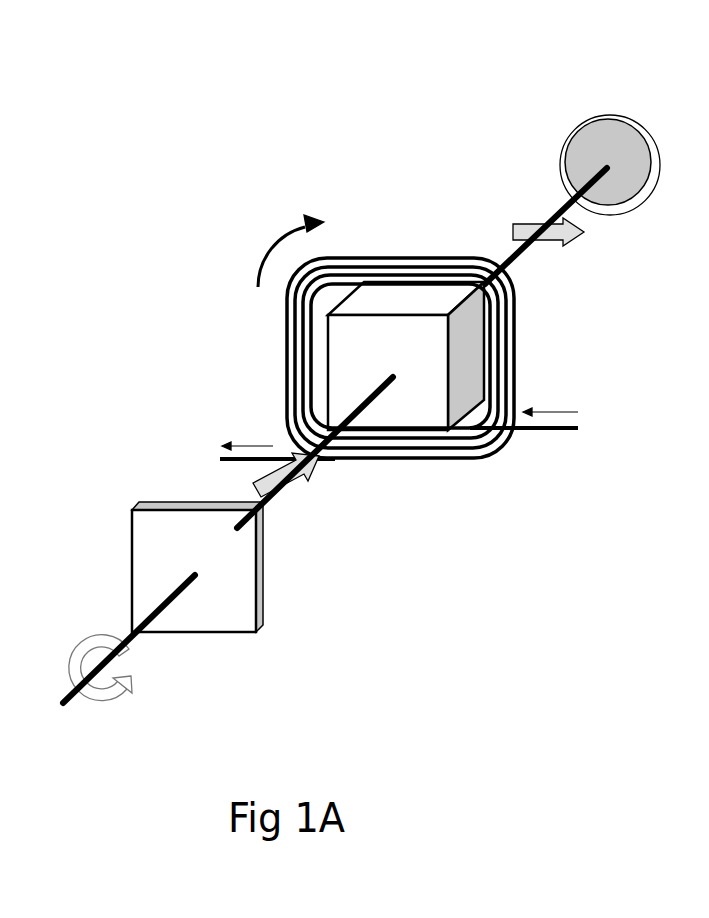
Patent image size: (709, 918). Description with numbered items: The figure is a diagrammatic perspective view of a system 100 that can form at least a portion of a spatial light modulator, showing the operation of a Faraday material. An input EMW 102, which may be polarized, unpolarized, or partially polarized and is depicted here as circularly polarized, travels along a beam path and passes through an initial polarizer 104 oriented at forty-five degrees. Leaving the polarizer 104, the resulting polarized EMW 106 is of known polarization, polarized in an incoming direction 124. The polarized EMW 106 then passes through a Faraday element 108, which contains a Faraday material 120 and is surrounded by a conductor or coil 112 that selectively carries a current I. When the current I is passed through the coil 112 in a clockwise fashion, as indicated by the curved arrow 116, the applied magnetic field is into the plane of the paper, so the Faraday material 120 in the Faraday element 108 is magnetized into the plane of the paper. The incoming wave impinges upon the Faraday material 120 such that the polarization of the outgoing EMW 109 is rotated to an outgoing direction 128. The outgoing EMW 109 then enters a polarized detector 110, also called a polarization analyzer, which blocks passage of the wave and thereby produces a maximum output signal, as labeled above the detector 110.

The system 100 is at (437, 65).
The input EMW 102 is at (72, 708).
The initial polarizer 104 is at (265, 598).
The polarized EMW 106 is at (273, 503).
The Faraday element 108 is at (441, 431).
The outgoing EMW 109 is at (507, 262).
The polarized detector 110 is at (620, 193).
The coil 112 is at (515, 298).
The arrow 116 is at (288, 226).
The Faraday material 120 is at (467, 376).
The incoming direction 124 is at (313, 480).
The outgoing direction 128 is at (569, 242).